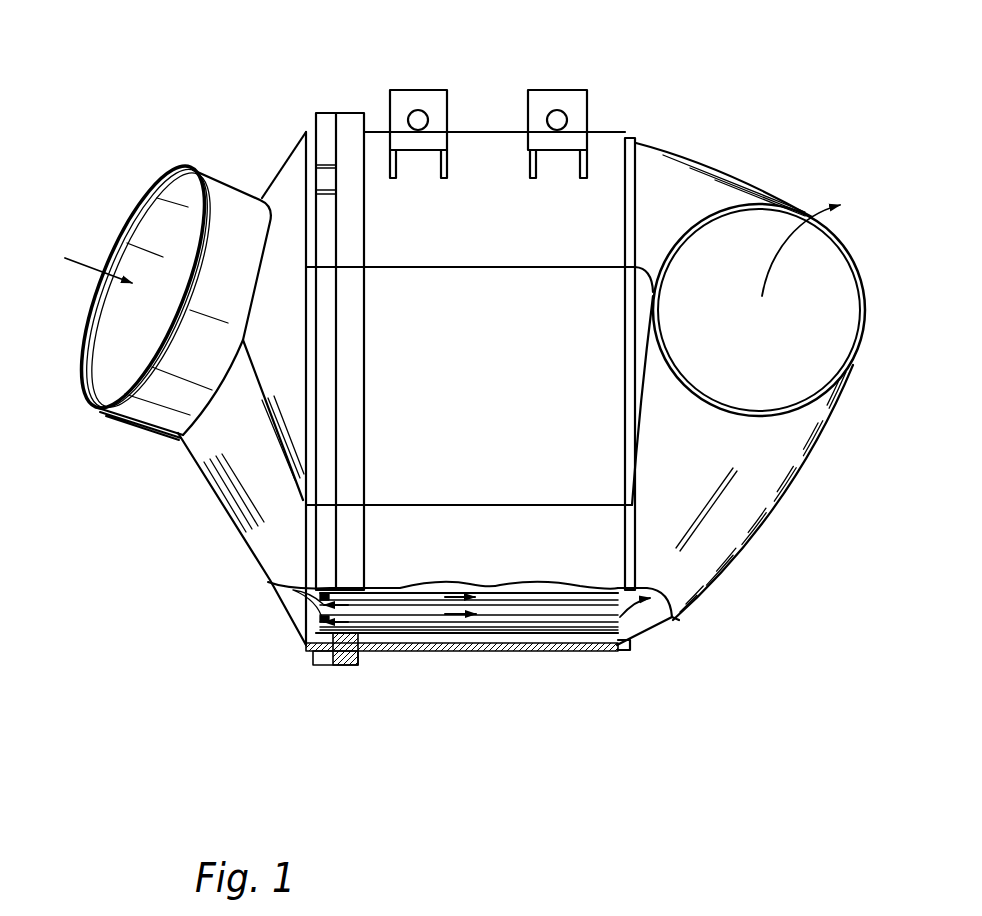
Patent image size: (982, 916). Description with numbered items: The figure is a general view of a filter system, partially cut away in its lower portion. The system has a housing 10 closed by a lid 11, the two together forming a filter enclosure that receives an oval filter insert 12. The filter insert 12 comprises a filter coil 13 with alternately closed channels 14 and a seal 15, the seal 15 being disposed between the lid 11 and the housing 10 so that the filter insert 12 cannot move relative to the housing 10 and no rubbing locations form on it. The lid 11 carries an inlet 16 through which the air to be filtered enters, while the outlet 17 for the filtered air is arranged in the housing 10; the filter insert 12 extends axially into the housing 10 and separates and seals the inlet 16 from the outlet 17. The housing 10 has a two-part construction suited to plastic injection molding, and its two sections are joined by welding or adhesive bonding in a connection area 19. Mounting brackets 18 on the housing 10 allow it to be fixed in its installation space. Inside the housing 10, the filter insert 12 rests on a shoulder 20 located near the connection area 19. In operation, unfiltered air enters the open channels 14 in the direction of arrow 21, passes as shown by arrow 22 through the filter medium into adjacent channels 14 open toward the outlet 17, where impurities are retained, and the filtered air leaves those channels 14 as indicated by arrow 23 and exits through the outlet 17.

The housing 10 is at (757, 497).
The lid 11 is at (263, 535).
The filter insert 12 is at (503, 632).
The filter coil 13 is at (538, 637).
The channels 14 is at (548, 615).
The seal 15 is at (346, 667).
The inlet 16 is at (120, 316).
The outlet 17 is at (752, 225).
The mounting brackets 18 is at (412, 92).
The connection area 19 is at (632, 133).
The shoulder 20 is at (596, 655).
The arrow 21 is at (300, 590).
The arrow 22 is at (422, 605).
The arrow 23 is at (590, 615).